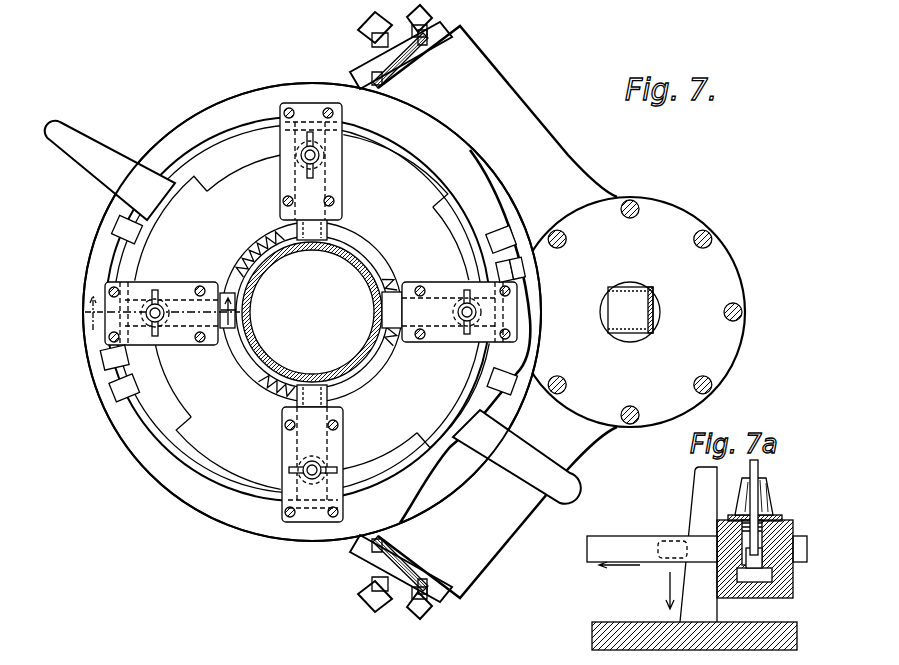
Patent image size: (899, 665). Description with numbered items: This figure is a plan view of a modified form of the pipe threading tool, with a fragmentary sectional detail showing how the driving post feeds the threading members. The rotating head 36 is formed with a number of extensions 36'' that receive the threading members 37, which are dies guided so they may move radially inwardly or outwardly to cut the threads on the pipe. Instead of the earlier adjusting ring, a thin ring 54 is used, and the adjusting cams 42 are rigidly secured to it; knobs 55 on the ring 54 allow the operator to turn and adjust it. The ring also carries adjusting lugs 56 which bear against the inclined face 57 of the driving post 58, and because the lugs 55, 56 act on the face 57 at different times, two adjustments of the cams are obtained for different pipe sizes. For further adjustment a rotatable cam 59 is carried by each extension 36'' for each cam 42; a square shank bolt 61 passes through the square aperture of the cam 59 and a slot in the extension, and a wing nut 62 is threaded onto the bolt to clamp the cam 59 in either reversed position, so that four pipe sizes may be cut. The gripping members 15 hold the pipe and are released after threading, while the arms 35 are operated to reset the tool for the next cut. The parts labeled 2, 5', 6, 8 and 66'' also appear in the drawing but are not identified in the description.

In FIG. 7, the drive disc 2 is at (733, 322).
In FIG. 7, the bolts 5' is at (645, 312).
In FIG. 7, the square drive socket 6 is at (645, 313).
In FIG. 7, the jaws 8 is at (194, 312).
In FIG. 7, the gripping members 15 is at (263, 213).
In FIG. 7, the arms 35 is at (80, 172).
In FIG. 7, the head 36 is at (345, 309).
In FIG. 7, the extensions 36'' is at (353, 312).
In FIG. 7, the threading members 37 is at (390, 278).
In FIG. 7, the adjusting cams 42 is at (462, 250).
In FIG. 7, the thin ring 54 is at (447, 185).
In FIG. 7, the knobs 55 is at (520, 398).
In FIG. 7, the adjusting lugs 56 is at (508, 232).
In FIG. 7A, the adjusting lugs 56 is at (657, 548).
In FIG. 7, the inclined face 57 is at (515, 252).
In FIG. 7A, the inclined face 57 is at (690, 523).
In FIG. 7, the driving post 58 is at (516, 273).
In FIG. 7A, the driving post 58 is at (690, 588).
In FIG. 7A, the rotatable cam 59 is at (768, 540).
In FIG. 7A, the square shank bolt 61 is at (758, 562).
In FIG. 7, the wing nut 62 is at (463, 295).
In FIG. 7A, the wing nut 62 is at (759, 468).
In FIG. 7A, the block 66'' is at (762, 541).